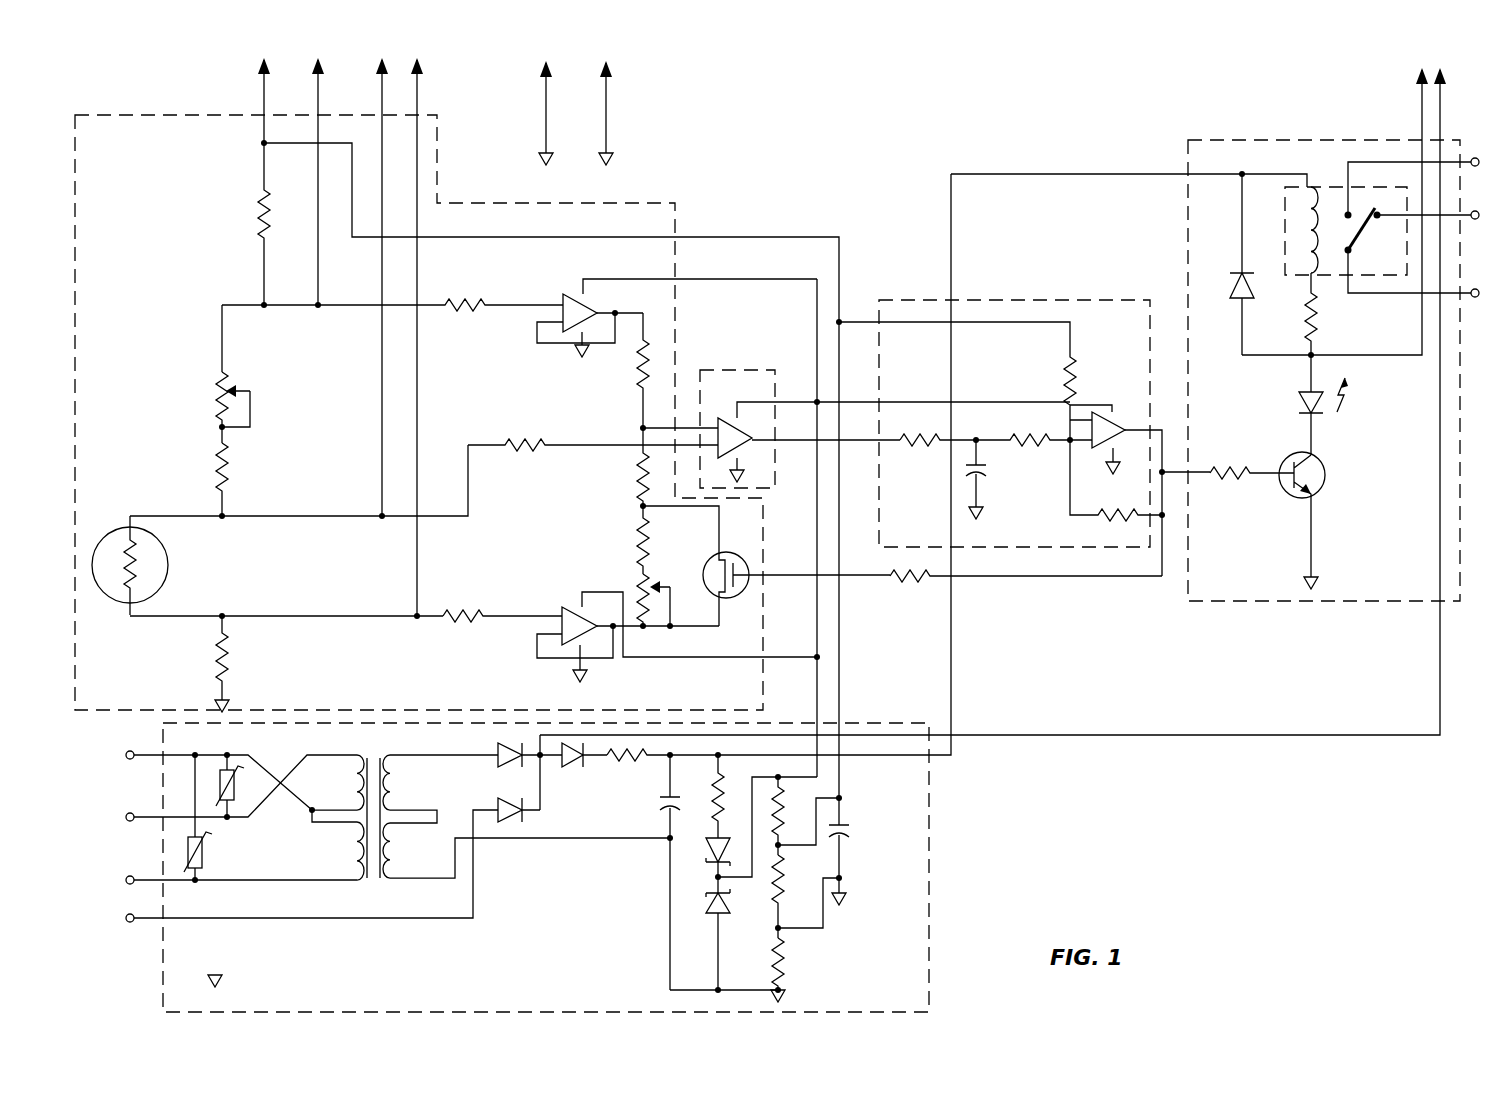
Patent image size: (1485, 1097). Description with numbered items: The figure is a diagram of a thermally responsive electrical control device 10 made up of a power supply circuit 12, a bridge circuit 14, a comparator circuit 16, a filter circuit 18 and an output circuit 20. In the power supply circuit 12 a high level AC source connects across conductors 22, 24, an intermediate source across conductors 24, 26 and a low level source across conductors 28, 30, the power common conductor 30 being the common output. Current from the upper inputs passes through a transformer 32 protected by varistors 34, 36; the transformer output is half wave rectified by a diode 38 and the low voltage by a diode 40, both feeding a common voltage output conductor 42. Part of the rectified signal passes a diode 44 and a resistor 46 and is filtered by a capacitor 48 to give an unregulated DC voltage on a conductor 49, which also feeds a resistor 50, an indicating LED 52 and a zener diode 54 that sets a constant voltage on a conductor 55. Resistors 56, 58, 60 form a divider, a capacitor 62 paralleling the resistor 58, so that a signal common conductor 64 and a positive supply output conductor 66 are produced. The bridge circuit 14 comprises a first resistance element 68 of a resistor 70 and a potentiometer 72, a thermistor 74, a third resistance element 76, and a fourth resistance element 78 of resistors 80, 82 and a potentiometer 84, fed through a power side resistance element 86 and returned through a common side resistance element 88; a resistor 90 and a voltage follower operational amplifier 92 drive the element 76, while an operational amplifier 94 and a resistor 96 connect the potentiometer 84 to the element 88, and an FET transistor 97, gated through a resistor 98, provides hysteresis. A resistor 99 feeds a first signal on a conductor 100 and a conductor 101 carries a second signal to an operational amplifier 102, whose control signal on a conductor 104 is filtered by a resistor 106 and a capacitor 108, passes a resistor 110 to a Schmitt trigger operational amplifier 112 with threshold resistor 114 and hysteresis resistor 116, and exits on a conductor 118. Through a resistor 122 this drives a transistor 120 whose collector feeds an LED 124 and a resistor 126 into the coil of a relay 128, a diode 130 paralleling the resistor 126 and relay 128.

The thermally responsive electrical control device 10 is at (1140, 800).
The power supply circuit 12 is at (929, 931).
The bridge circuit 14 is at (597, 200).
The comparator circuit 16 is at (730, 370).
The filter circuit 18 is at (1033, 300).
The output circuit 20 is at (1267, 603).
The conductor 22 is at (126, 880).
The conductor 24 is at (126, 817).
The conductor 26 is at (126, 755).
The conductor 28 is at (126, 918).
The power common conductor 30 is at (606, 135).
The transformer 32 is at (400, 790).
The varistor 34 is at (240, 805).
The varistor 36 is at (212, 860).
The diode 38 is at (495, 750).
The diode 40 is at (510, 822).
The common voltage output conductor 42 is at (1443, 125).
The diode 44 is at (575, 768).
The resistor 46 is at (625, 762).
The capacitor 48 is at (660, 805).
The conductor 49 is at (950, 680).
The resistor 50 is at (715, 800).
The LED 52 is at (705, 850).
The zener diode 54 is at (708, 920).
The conductor 55 is at (817, 700).
The resistor 56 is at (782, 815).
The resistor 58 is at (775, 885).
The resistor 60 is at (782, 968).
The capacitor 62 is at (850, 830).
The signal common conductor 64 is at (546, 133).
The positive supply output conductor 66 is at (343, 143).
The first resistance element 68 is at (250, 462).
The resistor 70 is at (218, 462).
The potentiometer 72 is at (222, 391).
The thermistor 74 is at (168, 570).
The third resistance element 76 is at (640, 372).
The fourth resistance element 78 is at (628, 517).
The resistor 80 is at (640, 478).
The resistor 82 is at (640, 530).
The potentiometer 84 is at (642, 585).
The power side resistance element 86 is at (262, 210).
The common side resistance element 88 is at (228, 658).
The resistor 90 is at (470, 300).
The operational amplifier 92 is at (573, 292).
The operational amplifier 94 is at (578, 620).
The resistor 96 is at (460, 628).
The FET transistor 97 is at (740, 598).
The resistor 98 is at (900, 580).
The resistor 99 is at (508, 440).
The conductor 100 is at (615, 445).
The conductor 101 is at (683, 428).
The operational amplifier 102 is at (733, 418).
The conductor 104 is at (793, 440).
The resistor 106 is at (910, 455).
The capacitor 108 is at (982, 473).
The resistor 110 is at (1020, 440).
The operational amplifier 112 is at (1115, 420).
The resistor 114 is at (1075, 375).
The resistor 116 is at (1100, 520).
The conductor 118 is at (1175, 473).
The transistor 120 is at (1326, 475).
The resistor 122 is at (1228, 490).
The LED 124 is at (1300, 408).
The resistor 126 is at (1313, 318).
The relay 128 is at (1330, 185).
The diode 130 is at (1232, 300).